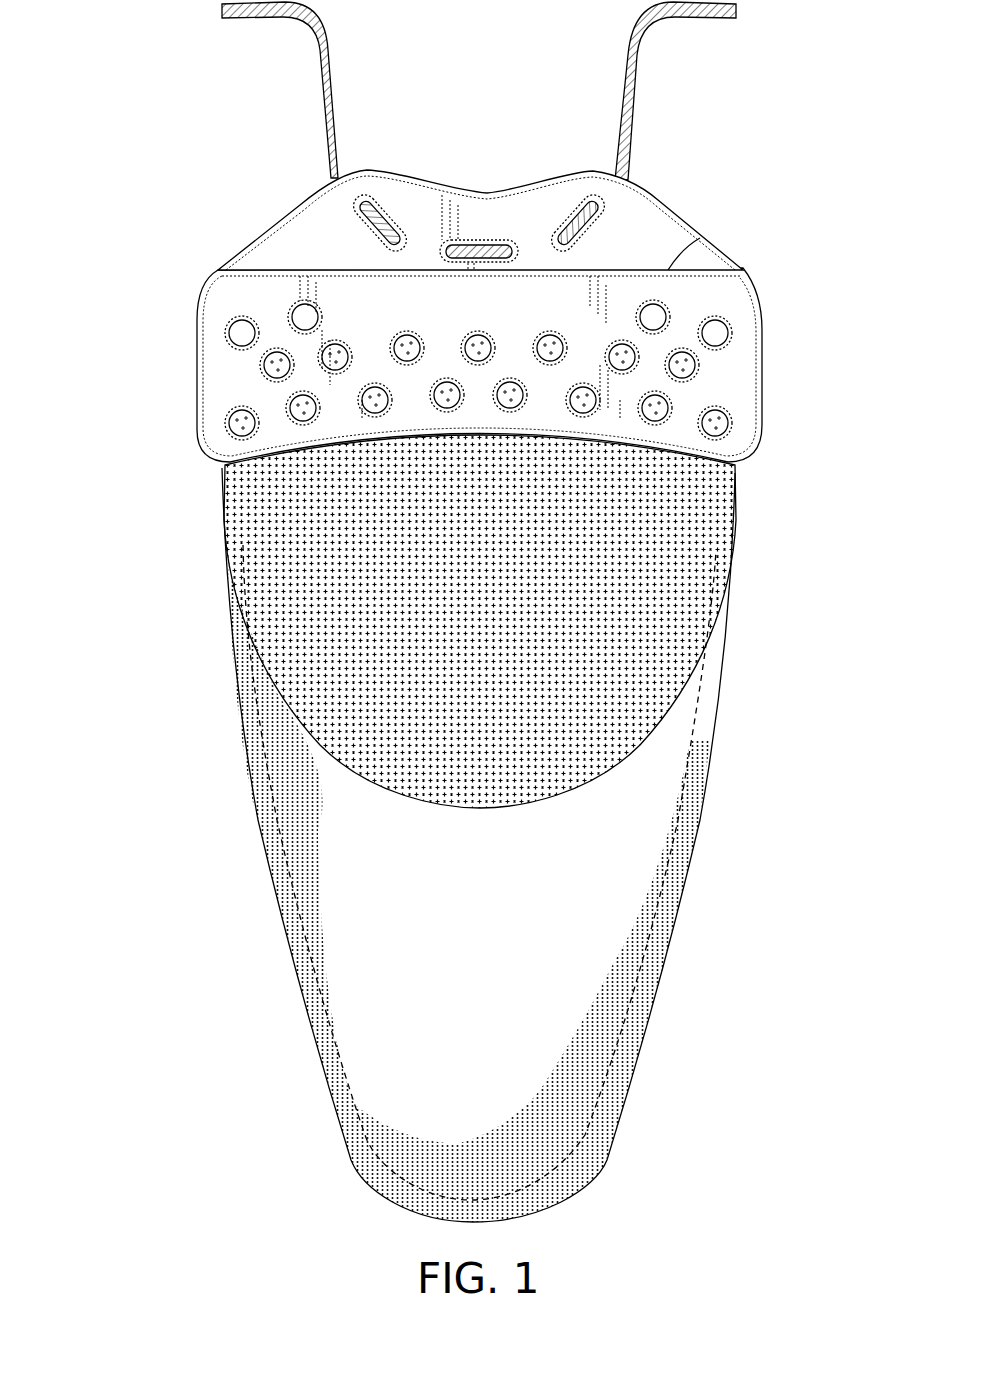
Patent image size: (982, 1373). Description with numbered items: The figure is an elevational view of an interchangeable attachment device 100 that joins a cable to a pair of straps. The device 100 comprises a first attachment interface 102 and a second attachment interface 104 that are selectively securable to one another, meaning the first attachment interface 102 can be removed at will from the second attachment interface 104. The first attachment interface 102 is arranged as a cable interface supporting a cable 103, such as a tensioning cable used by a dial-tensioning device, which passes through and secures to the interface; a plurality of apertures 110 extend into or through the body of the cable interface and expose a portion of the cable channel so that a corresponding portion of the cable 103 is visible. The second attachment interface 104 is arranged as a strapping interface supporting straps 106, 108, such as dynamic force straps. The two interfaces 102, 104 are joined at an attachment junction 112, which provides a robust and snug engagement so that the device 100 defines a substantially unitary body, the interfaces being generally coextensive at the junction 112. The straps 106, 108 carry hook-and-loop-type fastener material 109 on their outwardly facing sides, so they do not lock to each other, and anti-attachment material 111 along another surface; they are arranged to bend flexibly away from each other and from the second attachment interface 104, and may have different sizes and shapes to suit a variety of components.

The interchangeable attachment device 100 is at (270, 895).
The first attachment interface 102 is at (264, 215).
The cable 103 is at (653, 37).
The second attachment interface 104 is at (195, 334).
The strap 106 is at (300, 542).
The strap 108 is at (270, 712).
The fastener material 109 is at (670, 602).
The apertures 110 is at (482, 248).
The anti-attachment material 111 is at (675, 940).
The attachment junction 112 is at (700, 238).